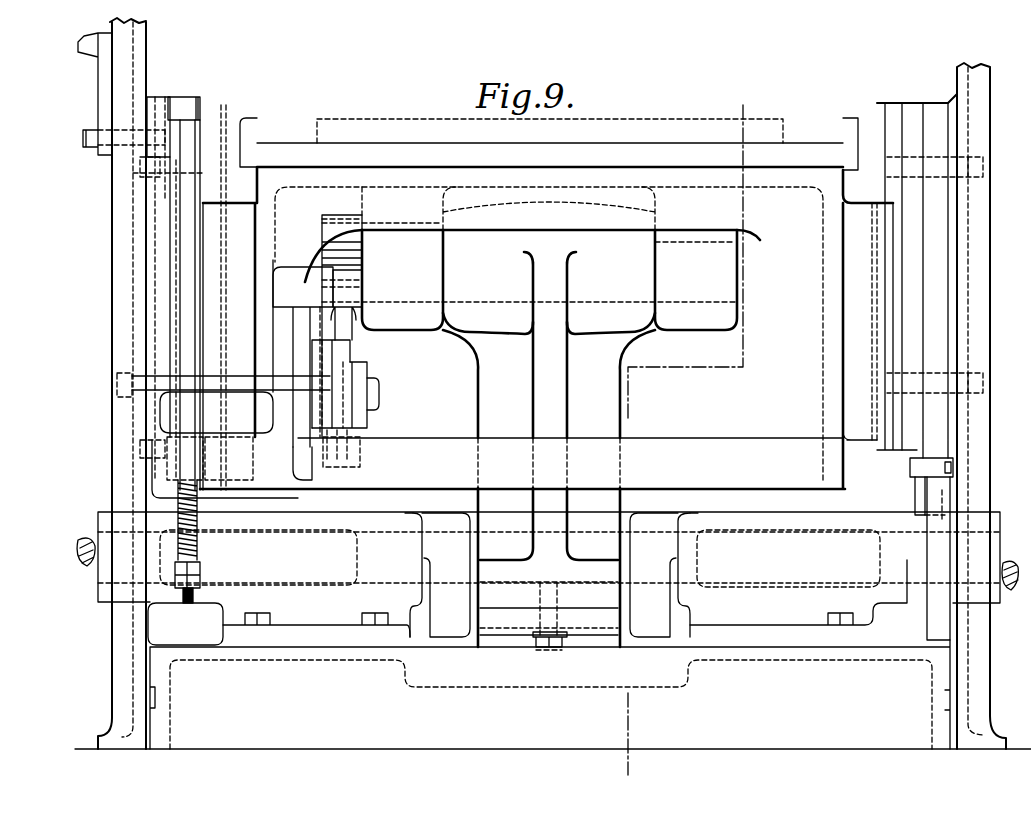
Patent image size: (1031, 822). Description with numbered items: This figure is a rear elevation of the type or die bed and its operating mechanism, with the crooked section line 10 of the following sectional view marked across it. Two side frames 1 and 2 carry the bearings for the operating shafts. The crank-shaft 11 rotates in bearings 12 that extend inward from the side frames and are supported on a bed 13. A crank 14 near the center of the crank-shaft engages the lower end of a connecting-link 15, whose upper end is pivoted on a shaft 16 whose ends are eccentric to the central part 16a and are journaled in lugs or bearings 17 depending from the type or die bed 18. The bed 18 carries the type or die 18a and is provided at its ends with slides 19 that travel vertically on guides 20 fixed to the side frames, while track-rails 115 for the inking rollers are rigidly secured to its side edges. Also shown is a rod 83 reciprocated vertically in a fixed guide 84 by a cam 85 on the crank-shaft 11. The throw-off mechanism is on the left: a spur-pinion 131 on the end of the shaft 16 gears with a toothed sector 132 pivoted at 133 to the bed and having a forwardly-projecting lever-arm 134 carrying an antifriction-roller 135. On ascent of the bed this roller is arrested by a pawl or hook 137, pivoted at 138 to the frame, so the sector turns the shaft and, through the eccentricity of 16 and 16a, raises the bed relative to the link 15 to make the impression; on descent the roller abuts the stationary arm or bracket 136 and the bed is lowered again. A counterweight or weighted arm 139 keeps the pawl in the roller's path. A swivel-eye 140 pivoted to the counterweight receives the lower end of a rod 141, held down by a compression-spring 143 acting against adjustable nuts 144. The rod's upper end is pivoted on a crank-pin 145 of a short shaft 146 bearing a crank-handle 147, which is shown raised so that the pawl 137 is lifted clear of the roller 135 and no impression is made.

The side frame 1 is at (977, 100).
The side frame 2 is at (122, 322).
The wheel 10 is at (685, 445).
The crank-shaft 11 is at (90, 580).
The bearings 12 is at (413, 519).
The bed 13 is at (550, 694).
The crank 14 is at (550, 575).
The connecting-link 15 is at (549, 451).
The shaft 16 is at (738, 266).
The central part of shaft 16a is at (623, 300).
The lugs or bearings 17 is at (529, 258).
The type or die bed 18 is at (546, 316).
The type or die 18a is at (600, 126).
The slides 19 is at (576, 291).
The guides 20 is at (210, 198).
The rod 83 is at (925, 497).
The fixed guide 84 is at (925, 470).
The cam 85 is at (920, 525).
The track-rails 115 is at (250, 130).
The spur-pinion 131 is at (352, 250).
The toothed sector 132 is at (356, 302).
The pivot 133 is at (372, 393).
The lever-arm 134 is at (352, 373).
The antifriction-roller 135 is at (322, 353).
The stationary arm or bracket 136 is at (310, 398).
The pawl or hook 137 is at (301, 284).
The pivot 138 is at (309, 478).
The counterweight or weighted arm 139 is at (214, 425).
The swivel-eye 140 is at (170, 444).
The rod 141 is at (186, 142).
The compression-spring 143 is at (197, 557).
The nuts 144 is at (200, 580).
The crank-pin 145 is at (200, 107).
The short shaft 146 is at (160, 117).
The crank-handle 147 is at (100, 78).